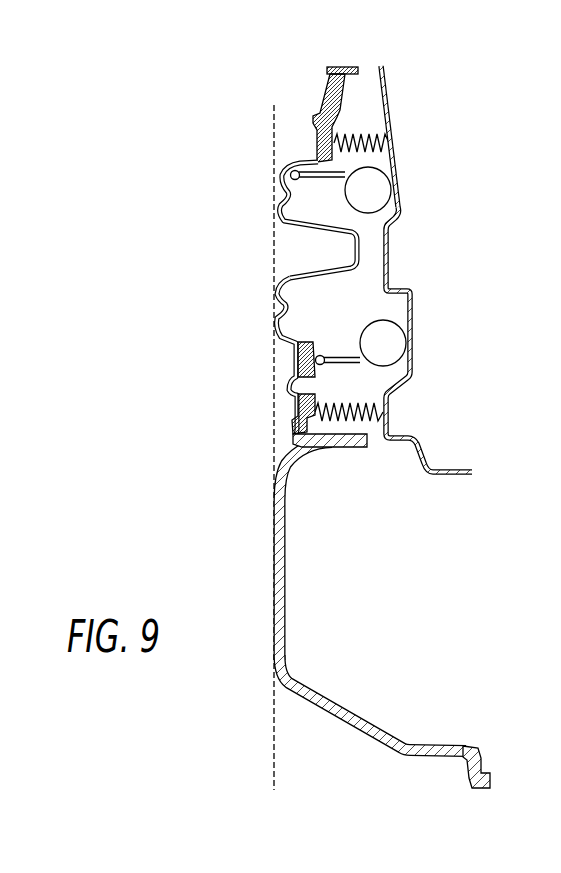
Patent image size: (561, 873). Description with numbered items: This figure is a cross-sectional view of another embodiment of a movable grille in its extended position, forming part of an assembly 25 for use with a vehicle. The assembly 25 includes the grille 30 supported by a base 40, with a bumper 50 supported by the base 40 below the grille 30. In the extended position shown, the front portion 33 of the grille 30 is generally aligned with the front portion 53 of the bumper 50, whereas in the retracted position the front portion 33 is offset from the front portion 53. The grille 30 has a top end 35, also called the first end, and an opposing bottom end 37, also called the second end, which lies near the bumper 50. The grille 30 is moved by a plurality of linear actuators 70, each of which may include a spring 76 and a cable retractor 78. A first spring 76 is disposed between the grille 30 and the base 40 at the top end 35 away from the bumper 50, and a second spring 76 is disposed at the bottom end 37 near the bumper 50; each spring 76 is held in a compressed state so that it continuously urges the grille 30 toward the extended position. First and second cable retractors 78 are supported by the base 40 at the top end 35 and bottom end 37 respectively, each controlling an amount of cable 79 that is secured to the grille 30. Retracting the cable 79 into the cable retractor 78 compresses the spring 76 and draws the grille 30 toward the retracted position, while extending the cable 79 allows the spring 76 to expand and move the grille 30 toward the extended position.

The assembly 25 is at (482, 88).
The grille 30 is at (327, 92).
The front portion of the grille 33 is at (275, 325).
The top end 35 is at (343, 68).
The bottom end 37 is at (288, 430).
The base 40 is at (390, 137).
The bumper 50 is at (368, 730).
The front portion of the bumper 53 is at (274, 568).
The linear actuator 70 is at (368, 190).
The spring 76 is at (358, 135).
The cable retractor 78 is at (370, 202).
The cable 79 is at (310, 175).